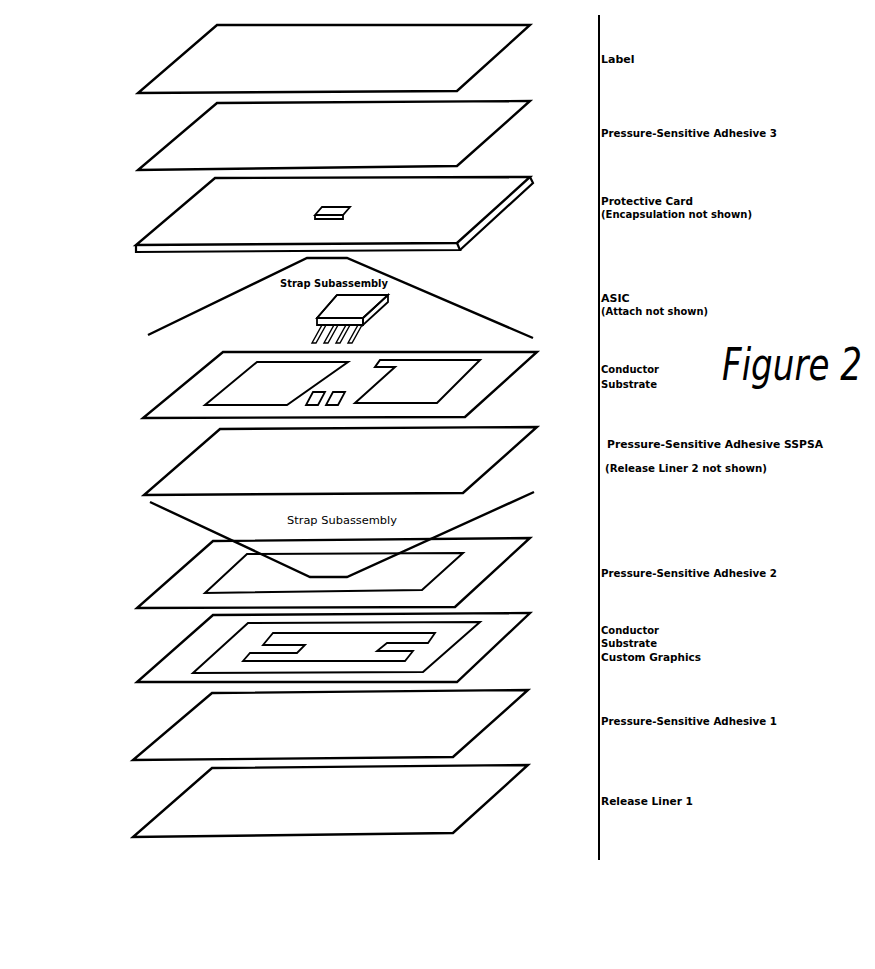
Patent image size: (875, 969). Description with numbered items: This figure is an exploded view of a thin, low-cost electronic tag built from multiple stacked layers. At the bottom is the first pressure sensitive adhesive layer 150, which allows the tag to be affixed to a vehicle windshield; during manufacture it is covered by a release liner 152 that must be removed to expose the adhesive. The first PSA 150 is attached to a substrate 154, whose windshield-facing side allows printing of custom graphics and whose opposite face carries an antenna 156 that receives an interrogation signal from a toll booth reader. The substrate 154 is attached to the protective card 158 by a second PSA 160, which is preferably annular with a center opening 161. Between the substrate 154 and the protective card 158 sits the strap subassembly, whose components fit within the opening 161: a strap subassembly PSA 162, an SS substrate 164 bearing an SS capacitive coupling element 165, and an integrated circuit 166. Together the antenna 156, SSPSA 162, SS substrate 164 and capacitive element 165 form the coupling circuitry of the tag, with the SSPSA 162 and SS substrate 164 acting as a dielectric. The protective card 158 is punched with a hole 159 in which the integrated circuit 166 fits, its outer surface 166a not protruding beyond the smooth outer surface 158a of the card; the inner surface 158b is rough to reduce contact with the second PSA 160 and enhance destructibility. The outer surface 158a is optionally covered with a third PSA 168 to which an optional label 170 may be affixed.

The label 170 is at (172, 52).
The third PSA 168 is at (178, 131).
The protective card 158 is at (332, 200).
The outer surface of the protective card 158a is at (475, 198).
The inner surface of the protective card 158b is at (483, 237).
The hole 159 is at (318, 210).
The integrated circuit 166 is at (376, 314).
The outer surface of the integrated circuit 166a is at (340, 307).
The SS capacitive coupling element 165 is at (379, 348).
The SS substrate 164 is at (313, 355).
The strap subassembly PSA (SSPSA) 162 is at (168, 463).
The second PSA 160 is at (328, 556).
The center opening 161 is at (437, 568).
The substrate 154 is at (321, 647).
The antenna 156 is at (450, 648).
The first pressure sensitive adhesive layer 150 is at (150, 733).
The release liner 152 is at (140, 818).